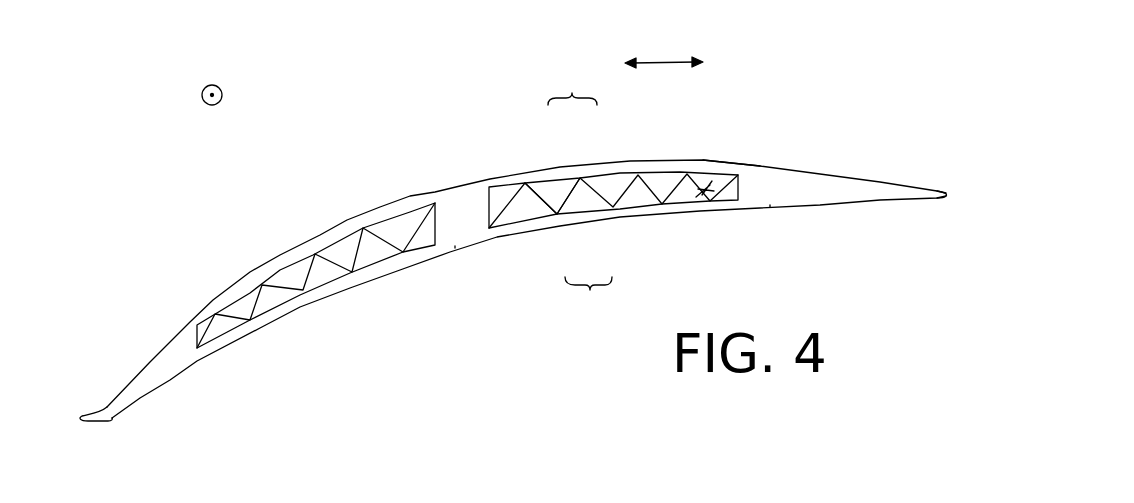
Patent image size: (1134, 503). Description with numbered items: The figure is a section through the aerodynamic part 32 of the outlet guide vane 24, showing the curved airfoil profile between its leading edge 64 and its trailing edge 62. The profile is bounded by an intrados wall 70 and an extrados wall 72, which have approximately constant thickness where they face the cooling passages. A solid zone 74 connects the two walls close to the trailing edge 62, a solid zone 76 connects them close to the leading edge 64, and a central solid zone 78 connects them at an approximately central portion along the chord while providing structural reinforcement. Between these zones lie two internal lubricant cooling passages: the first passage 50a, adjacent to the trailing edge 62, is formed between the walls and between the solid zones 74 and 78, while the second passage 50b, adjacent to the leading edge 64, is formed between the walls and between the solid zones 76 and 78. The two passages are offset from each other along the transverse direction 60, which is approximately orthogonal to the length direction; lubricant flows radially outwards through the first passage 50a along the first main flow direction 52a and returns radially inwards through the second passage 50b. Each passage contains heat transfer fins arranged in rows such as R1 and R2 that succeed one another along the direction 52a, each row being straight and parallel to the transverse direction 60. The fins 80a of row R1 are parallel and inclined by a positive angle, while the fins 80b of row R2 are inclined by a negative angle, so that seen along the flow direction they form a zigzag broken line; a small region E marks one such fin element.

The outlet guide vane 24 is at (515, 261).
The aerodynamic part 32 is at (783, 136).
The first internal lubricant cooling passage 50a is at (615, 191).
The second internal lubricant cooling passage 50b is at (221, 331).
The first main flow direction 52a is at (203, 99).
The transverse direction 60 is at (665, 60).
The trailing edge 62 is at (946, 193).
The leading edge 64 is at (86, 408).
The intrados wall 70 is at (420, 262).
The extrados wall 72 is at (316, 275).
The solid zone 74 is at (765, 192).
The solid zone 76 is at (150, 377).
The central solid zone 78 is at (458, 215).
The fins 80a is at (640, 206).
The fins 80b is at (615, 200).
The first row R1 is at (588, 296).
The second row R2 is at (572, 85).
The truss element E is at (718, 200).